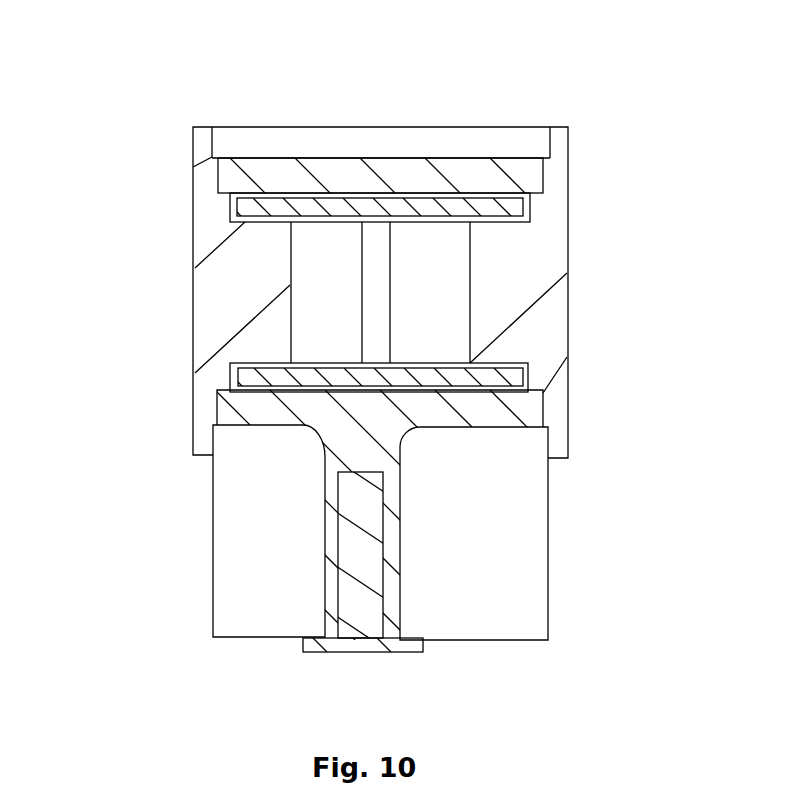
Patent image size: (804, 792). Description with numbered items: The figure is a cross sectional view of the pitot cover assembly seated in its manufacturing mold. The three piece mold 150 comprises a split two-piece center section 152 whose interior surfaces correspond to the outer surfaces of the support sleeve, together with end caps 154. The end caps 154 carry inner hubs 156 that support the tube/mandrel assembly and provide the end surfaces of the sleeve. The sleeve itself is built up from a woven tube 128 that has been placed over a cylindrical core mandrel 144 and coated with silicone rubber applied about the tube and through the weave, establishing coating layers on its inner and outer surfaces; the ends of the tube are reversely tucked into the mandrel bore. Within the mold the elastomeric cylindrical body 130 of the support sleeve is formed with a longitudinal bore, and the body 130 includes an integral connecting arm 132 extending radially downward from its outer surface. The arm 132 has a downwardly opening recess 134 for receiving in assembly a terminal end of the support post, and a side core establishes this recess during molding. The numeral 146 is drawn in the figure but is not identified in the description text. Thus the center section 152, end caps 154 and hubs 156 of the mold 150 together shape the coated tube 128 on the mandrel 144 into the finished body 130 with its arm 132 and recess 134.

The three piece mold 150 is at (196, 97).
The split two-piece center section 152 is at (383, 143).
The end caps 154 is at (193, 250).
The inner hubs 156 is at (245, 293).
The elastomeric cylindrical body 130 is at (520, 175).
The woven tube 128 is at (530, 207).
The cylindrical core mandrel 144 is at (505, 208).
The lower electrode plate 146 is at (503, 225).
The connecting arm 132 is at (335, 460).
The downwardly opening recess 134 is at (355, 600).